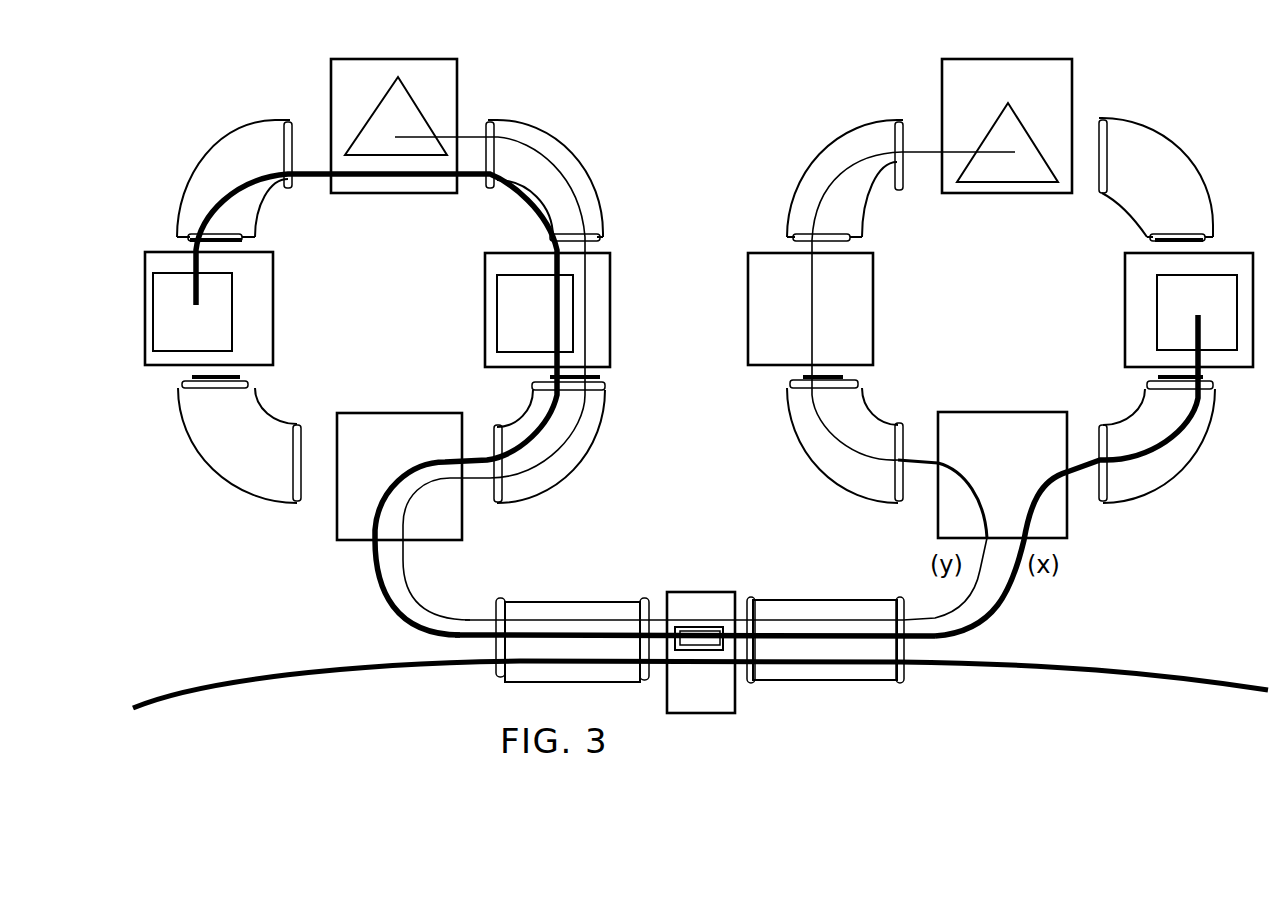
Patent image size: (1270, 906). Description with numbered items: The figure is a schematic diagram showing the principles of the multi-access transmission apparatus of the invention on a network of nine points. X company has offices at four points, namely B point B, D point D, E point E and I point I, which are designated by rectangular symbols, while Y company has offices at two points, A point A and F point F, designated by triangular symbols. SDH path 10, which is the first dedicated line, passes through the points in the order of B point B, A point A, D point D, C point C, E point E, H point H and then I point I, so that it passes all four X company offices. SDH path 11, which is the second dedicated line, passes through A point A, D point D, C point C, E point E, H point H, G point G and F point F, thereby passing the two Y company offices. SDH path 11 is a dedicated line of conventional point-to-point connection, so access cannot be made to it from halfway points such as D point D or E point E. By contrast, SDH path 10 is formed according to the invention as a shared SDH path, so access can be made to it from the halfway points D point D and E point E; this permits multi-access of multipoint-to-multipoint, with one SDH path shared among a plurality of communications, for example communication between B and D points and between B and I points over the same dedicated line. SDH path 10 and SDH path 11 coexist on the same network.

The SDH path 10 is at (812, 640).
The SDH path 11 is at (933, 613).
The A point A is at (394, 126).
The B point B is at (223, 308).
The C point C is at (399, 457).
The D point D is at (534, 310).
The E point E is at (702, 635).
The F point F is at (1007, 126).
The G point G is at (827, 309).
The H point H is at (1002, 458).
The I point I is at (1179, 310).